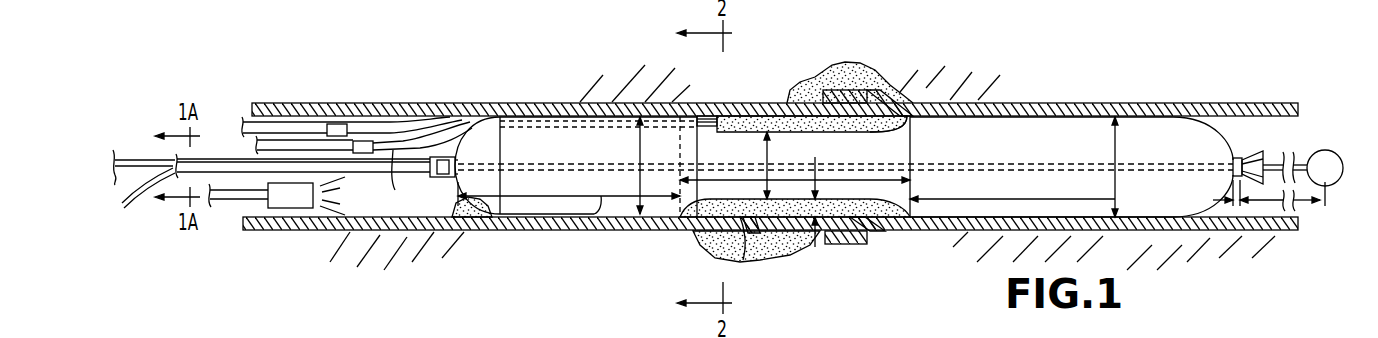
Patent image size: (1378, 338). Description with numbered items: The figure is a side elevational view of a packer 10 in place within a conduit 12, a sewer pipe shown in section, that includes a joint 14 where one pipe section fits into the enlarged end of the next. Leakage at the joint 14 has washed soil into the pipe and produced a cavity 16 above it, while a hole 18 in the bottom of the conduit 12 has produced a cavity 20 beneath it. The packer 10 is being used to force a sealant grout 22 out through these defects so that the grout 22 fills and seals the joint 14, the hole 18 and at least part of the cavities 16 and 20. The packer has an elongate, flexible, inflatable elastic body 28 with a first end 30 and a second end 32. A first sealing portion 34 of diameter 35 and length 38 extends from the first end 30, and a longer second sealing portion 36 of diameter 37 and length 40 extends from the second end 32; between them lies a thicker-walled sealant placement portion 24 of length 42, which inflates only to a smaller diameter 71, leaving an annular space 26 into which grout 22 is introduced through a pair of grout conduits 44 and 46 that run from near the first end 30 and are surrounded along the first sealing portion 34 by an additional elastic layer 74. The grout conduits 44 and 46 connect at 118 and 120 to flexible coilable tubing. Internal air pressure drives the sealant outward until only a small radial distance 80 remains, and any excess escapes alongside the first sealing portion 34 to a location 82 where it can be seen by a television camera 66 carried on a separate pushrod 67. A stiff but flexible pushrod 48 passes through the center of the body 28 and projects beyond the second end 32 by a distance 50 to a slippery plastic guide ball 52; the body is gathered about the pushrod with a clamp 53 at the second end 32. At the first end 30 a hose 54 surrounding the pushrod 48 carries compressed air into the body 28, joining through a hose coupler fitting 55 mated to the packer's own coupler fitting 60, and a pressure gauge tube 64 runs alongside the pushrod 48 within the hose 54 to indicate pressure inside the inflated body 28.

The packer 10 is at (1007, 106).
The conduit 12 is at (517, 103).
The joint 14 is at (882, 85).
The cavity 16 is at (807, 75).
The hole 18 is at (743, 253).
The cavity 20 is at (785, 254).
The grout 22 is at (769, 115).
The sealant placement portion 24 is at (880, 243).
The space 26 is at (873, 133).
The body 28 is at (1097, 128).
The first end 30 is at (470, 140).
The second end 32 is at (1220, 137).
The first sealing portion 34 is at (558, 140).
The diameter 35 is at (638, 147).
The second sealing portion 36 is at (1072, 143).
The diameter 37 is at (1118, 142).
The length 38 is at (598, 215).
The length 40 is at (1012, 199).
The length 42 is at (830, 167).
The grout conduit 44 is at (413, 118).
The grout conduit 46 is at (735, 115).
The pushrod 48 is at (128, 157).
The distance 50 is at (1270, 204).
The guide ball 52 is at (1326, 149).
The clamp 53 is at (468, 140).
The hose 54 is at (223, 155).
The hose coupler fitting 55 is at (428, 173).
The hose coupler fitting 60 is at (446, 155).
The pressure gauge tube 64 is at (460, 170).
The television camera 66 is at (290, 209).
The pushrod 67 is at (229, 204).
The diameter 71 is at (760, 147).
The elastic layer 74 is at (492, 214).
The radial distance 80 is at (817, 248).
The location 82 is at (456, 197).
The connection 118 is at (338, 123).
The connection 120 is at (365, 140).